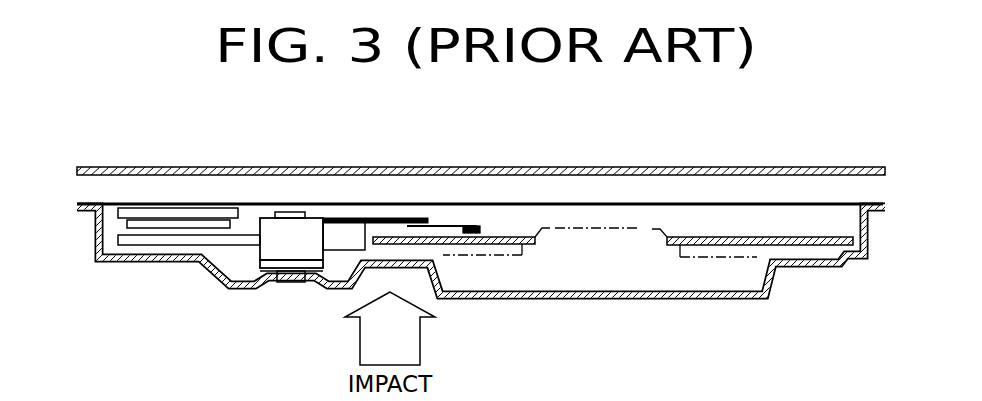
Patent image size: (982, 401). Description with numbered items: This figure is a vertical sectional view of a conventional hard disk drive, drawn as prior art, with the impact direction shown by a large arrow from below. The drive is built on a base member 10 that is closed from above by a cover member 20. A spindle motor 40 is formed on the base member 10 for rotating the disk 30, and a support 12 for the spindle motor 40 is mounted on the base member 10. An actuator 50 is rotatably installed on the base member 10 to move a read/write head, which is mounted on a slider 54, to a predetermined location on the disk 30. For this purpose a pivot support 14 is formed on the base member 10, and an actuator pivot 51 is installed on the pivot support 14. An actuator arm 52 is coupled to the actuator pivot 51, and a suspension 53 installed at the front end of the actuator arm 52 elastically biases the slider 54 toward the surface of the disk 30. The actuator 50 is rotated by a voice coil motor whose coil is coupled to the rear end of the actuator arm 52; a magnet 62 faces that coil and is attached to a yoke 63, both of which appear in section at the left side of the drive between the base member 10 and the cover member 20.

The base member 10 is at (832, 270).
The support 12 is at (702, 300).
The pivot support 14 is at (312, 283).
The cover member 20 is at (838, 167).
The disk 30 is at (505, 245).
The spindle motor 40 is at (647, 228).
The actuator 50 is at (396, 190).
The actuator pivot 51 is at (292, 212).
The actuator arm 52 is at (392, 218).
The suspension 53 is at (448, 225).
The slider 54 is at (480, 226).
The magnet 62 is at (163, 226).
The yoke 63 is at (147, 210).